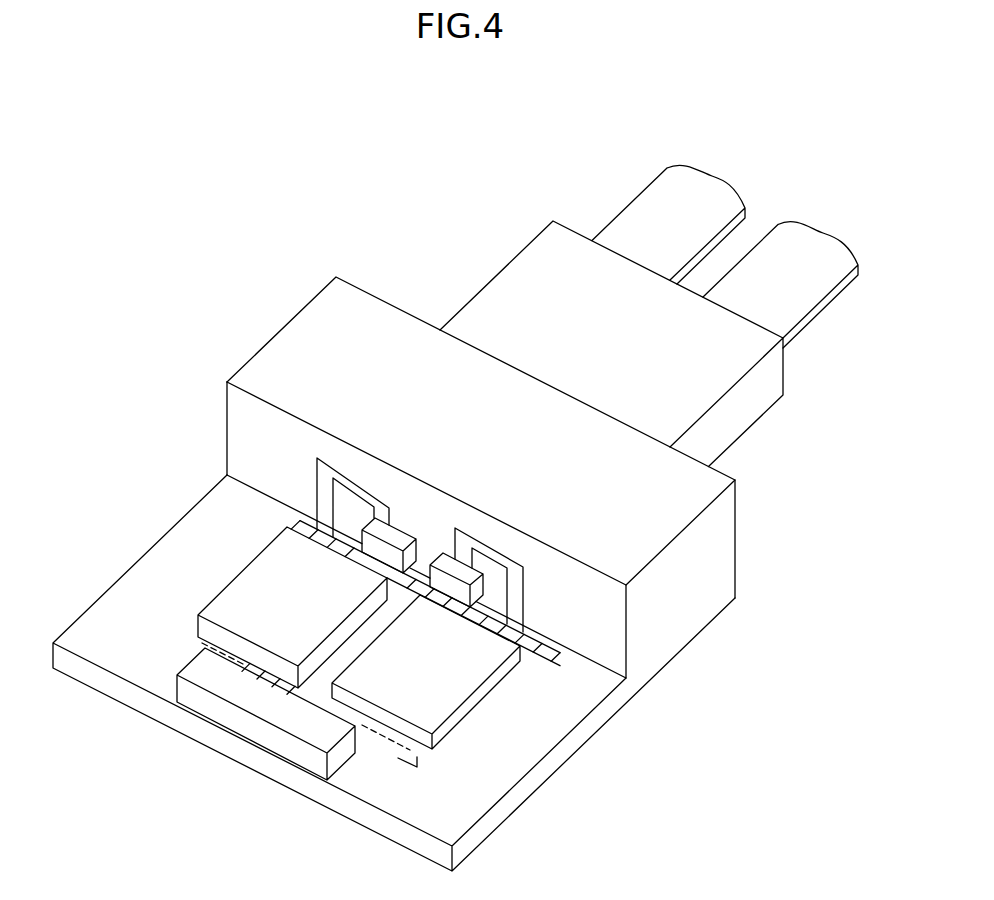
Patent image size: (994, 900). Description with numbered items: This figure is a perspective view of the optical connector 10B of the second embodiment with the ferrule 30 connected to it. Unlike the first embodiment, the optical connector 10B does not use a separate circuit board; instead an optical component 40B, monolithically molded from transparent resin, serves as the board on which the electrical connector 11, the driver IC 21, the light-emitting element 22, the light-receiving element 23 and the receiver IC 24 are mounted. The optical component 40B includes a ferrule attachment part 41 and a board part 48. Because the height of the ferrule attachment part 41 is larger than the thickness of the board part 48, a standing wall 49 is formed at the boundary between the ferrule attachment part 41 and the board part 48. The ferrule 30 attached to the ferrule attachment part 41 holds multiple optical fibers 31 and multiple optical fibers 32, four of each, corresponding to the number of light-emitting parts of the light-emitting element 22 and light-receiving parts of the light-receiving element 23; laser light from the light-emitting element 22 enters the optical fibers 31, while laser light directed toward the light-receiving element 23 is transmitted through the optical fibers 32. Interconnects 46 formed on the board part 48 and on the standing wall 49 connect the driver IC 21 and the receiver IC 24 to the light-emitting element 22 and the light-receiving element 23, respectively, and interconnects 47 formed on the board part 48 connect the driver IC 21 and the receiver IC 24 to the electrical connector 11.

The optical connector 10B is at (384, 204).
The electrical connector 11 is at (258, 705).
The driver IC 21 is at (452, 688).
The light-emitting element 22 is at (458, 563).
The light-receiving element 23 is at (389, 533).
The receiver IC 24 is at (268, 567).
The ferrule 30 is at (755, 410).
The optical fibers 31 is at (792, 281).
The optical fibers 32 is at (658, 205).
The optical component 40B is at (521, 479).
The ferrule attachment part 41 is at (693, 493).
The interconnects 46 is at (333, 541).
The interconnects 47 is at (193, 647).
The board part 48 is at (482, 810).
The standing wall 49 is at (596, 607).